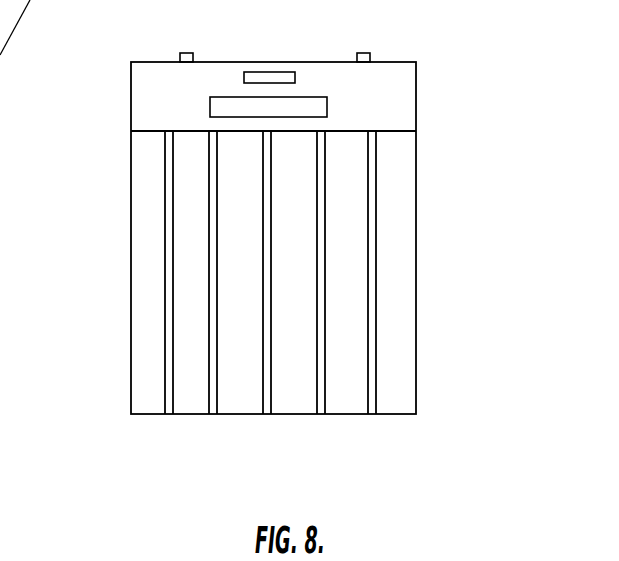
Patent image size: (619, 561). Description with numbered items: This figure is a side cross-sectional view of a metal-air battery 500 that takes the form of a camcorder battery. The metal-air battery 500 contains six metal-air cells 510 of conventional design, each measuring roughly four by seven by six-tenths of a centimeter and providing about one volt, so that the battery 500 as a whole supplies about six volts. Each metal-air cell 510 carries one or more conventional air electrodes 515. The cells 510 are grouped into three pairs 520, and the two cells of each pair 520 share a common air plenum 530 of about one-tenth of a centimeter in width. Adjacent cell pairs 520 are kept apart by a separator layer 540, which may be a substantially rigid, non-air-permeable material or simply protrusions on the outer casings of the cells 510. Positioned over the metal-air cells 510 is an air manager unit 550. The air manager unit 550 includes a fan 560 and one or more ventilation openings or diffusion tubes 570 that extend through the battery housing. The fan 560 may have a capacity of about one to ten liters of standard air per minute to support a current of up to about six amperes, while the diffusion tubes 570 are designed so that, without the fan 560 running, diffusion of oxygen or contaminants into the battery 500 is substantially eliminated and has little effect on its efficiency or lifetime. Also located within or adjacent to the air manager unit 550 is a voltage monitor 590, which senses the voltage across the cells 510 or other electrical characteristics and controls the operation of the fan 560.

The metal-air battery 500 is at (104, 57).
The metal-air cells 510 is at (161, 256).
The air electrodes 515 is at (18, 549).
The metal-air cell pairs 520 is at (184, 423).
The air plenum 530 is at (168, 415).
The separator layer 540 is at (208, 414).
The air manager unit 550 is at (425, 98).
The fan 560 is at (328, 107).
The diffusion tubes 570 is at (191, 53).
The voltage monitor 590 is at (244, 75).